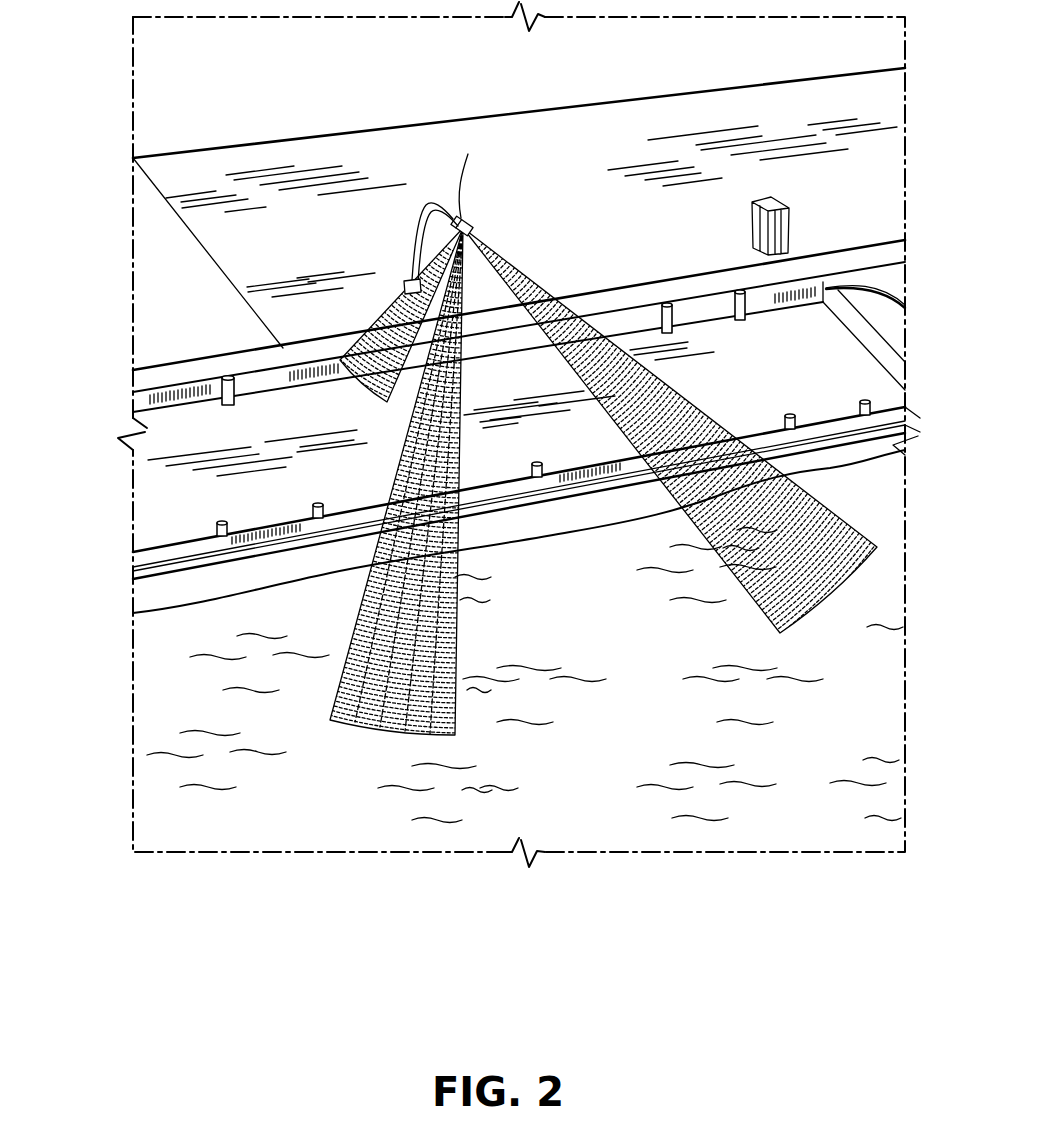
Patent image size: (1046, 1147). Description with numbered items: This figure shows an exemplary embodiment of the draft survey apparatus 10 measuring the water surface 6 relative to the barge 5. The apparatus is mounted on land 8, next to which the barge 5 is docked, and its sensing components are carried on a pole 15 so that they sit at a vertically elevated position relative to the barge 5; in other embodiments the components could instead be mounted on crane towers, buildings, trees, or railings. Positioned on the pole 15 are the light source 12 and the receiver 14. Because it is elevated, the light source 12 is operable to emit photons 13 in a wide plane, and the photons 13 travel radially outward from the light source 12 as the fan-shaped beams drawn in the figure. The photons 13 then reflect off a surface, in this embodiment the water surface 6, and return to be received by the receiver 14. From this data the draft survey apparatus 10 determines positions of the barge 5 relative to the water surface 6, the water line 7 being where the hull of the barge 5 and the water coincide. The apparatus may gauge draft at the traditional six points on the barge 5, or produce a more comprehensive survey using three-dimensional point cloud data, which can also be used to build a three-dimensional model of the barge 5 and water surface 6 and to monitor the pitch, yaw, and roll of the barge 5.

The barge 5 is at (875, 373).
The water surface 6 is at (890, 547).
The water line 7 is at (152, 620).
The land 8 is at (165, 282).
The draft survey apparatus 10 is at (491, 374).
The light source 12 is at (474, 225).
The photons 13 is at (678, 412).
The receiver 14 is at (475, 174).
The pole 15 is at (410, 237).